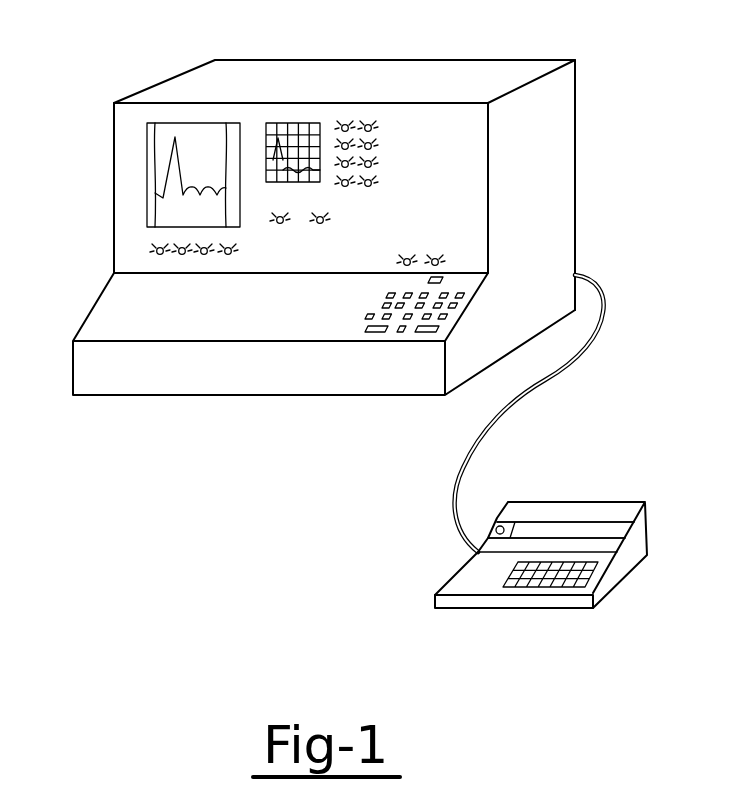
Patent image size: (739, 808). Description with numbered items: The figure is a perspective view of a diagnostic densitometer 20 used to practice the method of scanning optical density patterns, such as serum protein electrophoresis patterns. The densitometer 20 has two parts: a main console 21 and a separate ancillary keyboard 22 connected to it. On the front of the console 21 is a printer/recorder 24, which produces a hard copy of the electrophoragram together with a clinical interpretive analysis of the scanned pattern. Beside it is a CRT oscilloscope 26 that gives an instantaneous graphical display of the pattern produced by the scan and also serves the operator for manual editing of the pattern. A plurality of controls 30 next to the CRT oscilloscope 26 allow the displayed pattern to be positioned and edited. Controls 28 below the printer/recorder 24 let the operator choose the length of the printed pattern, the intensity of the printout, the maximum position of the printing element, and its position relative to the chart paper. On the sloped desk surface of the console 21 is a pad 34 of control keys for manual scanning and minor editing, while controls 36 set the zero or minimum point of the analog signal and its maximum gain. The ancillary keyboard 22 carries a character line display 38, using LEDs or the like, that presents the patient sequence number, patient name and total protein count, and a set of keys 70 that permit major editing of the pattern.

The densitometer 20 is at (98, 290).
The main console 21 is at (213, 376).
The ancillary keyboard 22 is at (560, 502).
The printer/recorder 24 is at (152, 152).
The CRT oscilloscope 26 is at (290, 123).
The controls 28 is at (190, 258).
The controls 30 is at (387, 158).
The pad of control keys 34 is at (380, 333).
The controls 36 is at (457, 212).
The character line display 38 is at (605, 522).
The keys 70 is at (518, 583).